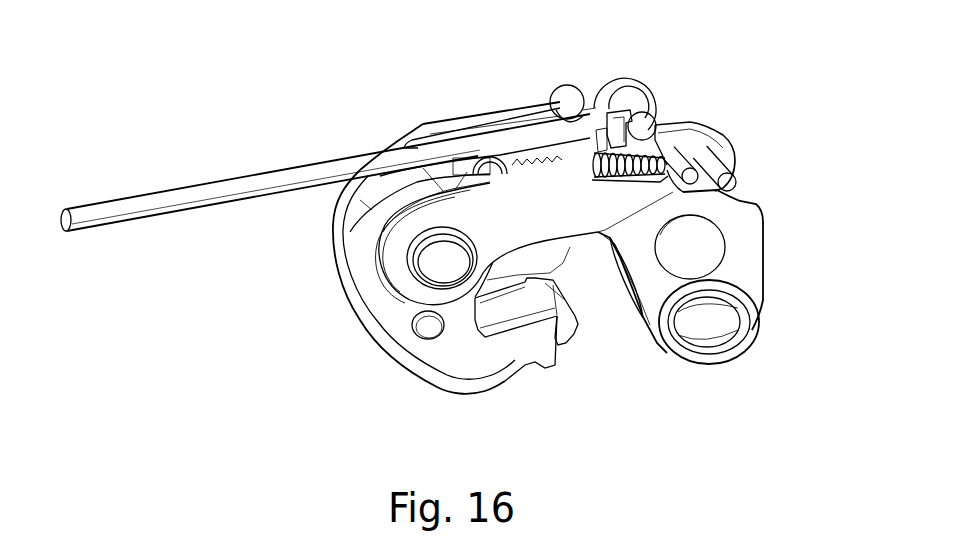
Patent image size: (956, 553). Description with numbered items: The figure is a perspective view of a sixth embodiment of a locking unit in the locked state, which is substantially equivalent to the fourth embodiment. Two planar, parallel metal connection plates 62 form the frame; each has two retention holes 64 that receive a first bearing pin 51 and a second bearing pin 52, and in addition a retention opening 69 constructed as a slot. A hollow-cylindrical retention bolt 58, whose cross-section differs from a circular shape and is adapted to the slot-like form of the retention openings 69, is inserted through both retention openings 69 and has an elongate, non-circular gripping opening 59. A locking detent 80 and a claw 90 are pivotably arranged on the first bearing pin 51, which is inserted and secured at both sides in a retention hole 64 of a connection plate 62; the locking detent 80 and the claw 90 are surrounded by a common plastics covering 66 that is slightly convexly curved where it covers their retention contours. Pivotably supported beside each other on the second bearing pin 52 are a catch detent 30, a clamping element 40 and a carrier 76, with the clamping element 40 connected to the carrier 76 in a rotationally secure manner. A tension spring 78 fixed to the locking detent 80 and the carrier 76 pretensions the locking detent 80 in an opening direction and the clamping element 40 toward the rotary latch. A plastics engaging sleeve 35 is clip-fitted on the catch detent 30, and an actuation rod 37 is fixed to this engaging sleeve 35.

The catch detent 30 is at (627, 80).
The engaging sleeve 35 is at (602, 107).
The actuation rod 37 is at (99, 207).
The clamping element 40 is at (677, 123).
The first bearing pin 51 is at (430, 258).
The second bearing pin 52 is at (700, 244).
The retention bolt 58 is at (708, 330).
The gripping opening 59 is at (683, 322).
The connection plate 62 is at (460, 128).
The retention hole 64 is at (430, 273).
The covering 66 is at (483, 353).
The retention opening 69 is at (727, 317).
The carrier 76 is at (717, 128).
The tension spring 78 is at (553, 122).
The locking detent 80 is at (397, 343).
The claw 90 is at (345, 205).